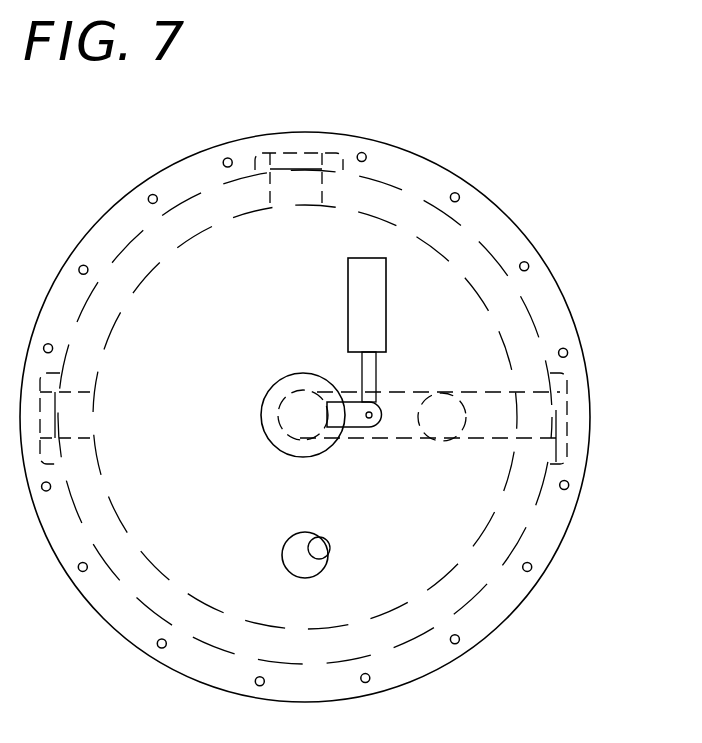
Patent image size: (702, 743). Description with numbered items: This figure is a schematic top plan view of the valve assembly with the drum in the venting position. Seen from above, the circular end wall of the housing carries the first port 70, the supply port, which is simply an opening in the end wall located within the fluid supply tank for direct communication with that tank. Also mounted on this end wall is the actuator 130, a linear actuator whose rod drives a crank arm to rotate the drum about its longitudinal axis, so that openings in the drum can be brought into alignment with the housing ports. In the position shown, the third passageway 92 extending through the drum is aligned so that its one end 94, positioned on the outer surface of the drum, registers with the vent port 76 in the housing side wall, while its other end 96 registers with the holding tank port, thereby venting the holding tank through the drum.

The first port 70 is at (328, 556).
The fourth port 76 is at (568, 428).
The third passageway 92 is at (551, 378).
The one end of third passageway 94 is at (366, 417).
The other end of third passageway 96 is at (418, 430).
The actuator 130 is at (375, 293).